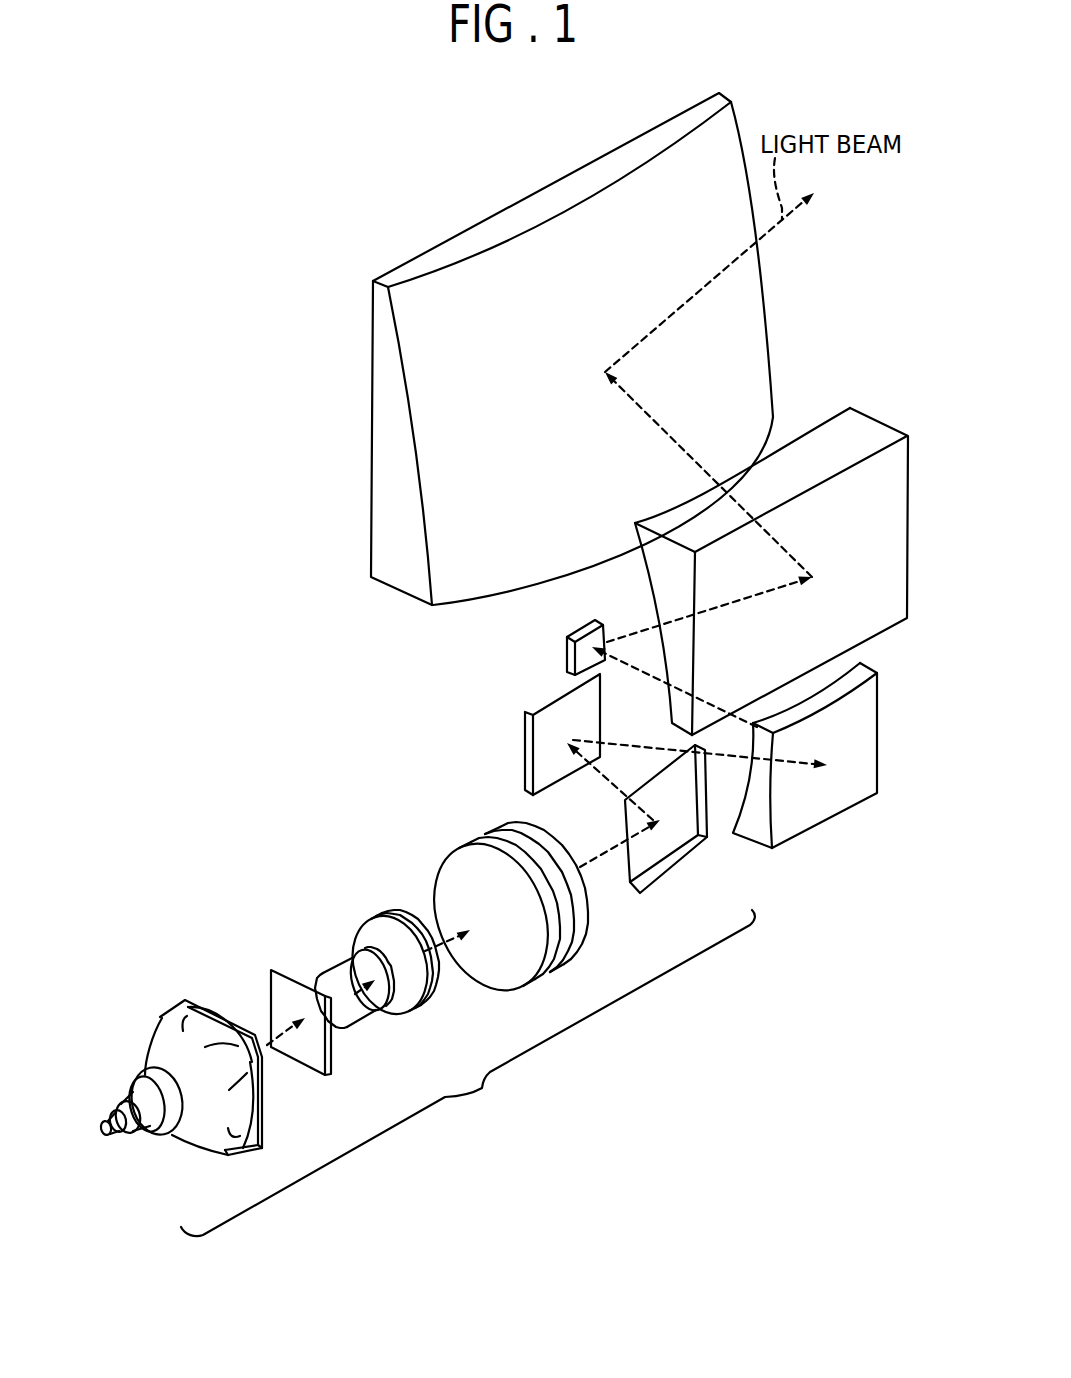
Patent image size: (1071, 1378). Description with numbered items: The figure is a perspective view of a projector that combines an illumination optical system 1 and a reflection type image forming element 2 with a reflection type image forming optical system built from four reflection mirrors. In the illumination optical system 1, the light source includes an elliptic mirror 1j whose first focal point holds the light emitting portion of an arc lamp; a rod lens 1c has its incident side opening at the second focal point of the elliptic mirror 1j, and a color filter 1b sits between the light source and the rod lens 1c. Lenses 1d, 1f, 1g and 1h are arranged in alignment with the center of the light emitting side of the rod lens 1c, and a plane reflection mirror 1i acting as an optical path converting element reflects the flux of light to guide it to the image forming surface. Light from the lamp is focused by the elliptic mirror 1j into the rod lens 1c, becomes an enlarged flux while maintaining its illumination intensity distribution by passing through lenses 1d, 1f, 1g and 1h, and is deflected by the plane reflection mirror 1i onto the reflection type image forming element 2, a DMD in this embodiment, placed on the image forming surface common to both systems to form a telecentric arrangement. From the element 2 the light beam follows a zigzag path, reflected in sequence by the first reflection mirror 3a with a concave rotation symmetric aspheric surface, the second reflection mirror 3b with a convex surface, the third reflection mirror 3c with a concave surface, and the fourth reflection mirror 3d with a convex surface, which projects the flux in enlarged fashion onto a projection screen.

The illumination optical system 1 is at (468, 1073).
The color filter 1b is at (268, 1002).
The rod lens 1c is at (317, 981).
The lens 1d is at (355, 956).
The lens 1f is at (373, 916).
The lens 1g is at (449, 848).
The lens 1h is at (479, 830).
The plane reflection mirror 1i is at (667, 877).
The elliptic mirror 1j is at (160, 1045).
The reflection type image forming element 2 is at (525, 713).
The first reflection mirror 3a is at (817, 827).
The second reflection mirror 3b is at (567, 648).
The third reflection mirror 3c is at (863, 423).
The fourth reflection mirror 3d is at (751, 310).